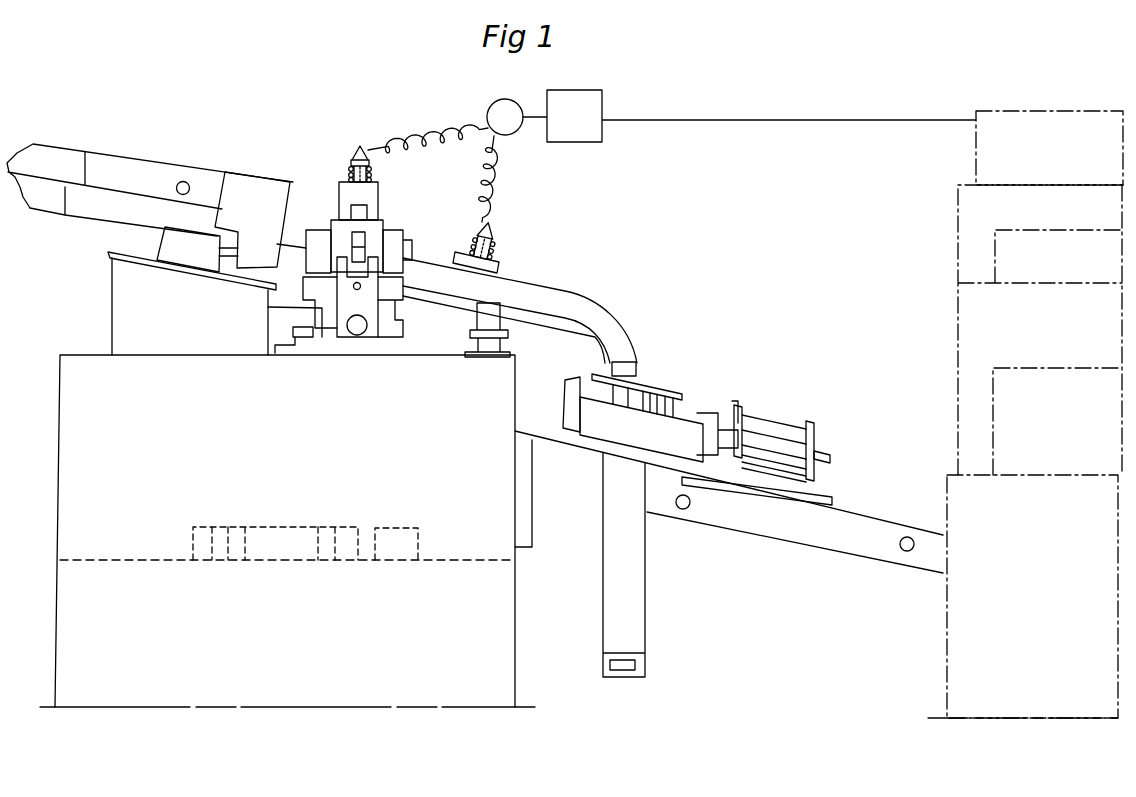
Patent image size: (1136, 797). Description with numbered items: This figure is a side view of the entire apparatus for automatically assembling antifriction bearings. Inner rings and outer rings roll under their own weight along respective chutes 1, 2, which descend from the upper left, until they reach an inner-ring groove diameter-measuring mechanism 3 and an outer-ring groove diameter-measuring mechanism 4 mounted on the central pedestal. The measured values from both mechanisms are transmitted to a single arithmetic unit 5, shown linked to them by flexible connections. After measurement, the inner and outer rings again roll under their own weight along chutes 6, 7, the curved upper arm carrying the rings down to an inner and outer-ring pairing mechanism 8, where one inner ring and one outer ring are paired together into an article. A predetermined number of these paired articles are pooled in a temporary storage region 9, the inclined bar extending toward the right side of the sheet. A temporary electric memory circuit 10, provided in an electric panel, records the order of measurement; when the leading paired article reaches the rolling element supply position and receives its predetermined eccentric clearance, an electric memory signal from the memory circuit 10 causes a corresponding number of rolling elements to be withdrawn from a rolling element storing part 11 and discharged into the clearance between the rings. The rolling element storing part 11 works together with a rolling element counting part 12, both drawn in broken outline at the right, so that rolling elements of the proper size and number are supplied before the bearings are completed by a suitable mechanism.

The chute 1 is at (83, 206).
The chute 2 is at (119, 167).
The inner-ring groove diameter-measuring mechanism 3 is at (498, 247).
The outer-ring groove diameter-measuring mechanism 4 is at (328, 176).
The arithmetic unit 5 is at (493, 102).
The chute 6 is at (557, 338).
The chute 7 is at (580, 297).
The inner and outer-ring pairing mechanism 8 is at (705, 382).
The temporary storage region 9 is at (793, 535).
The temporary electric memory circuit 10 is at (578, 143).
The rolling element storing part 11 is at (1064, 165).
The rolling element counting part 12 is at (1060, 270).